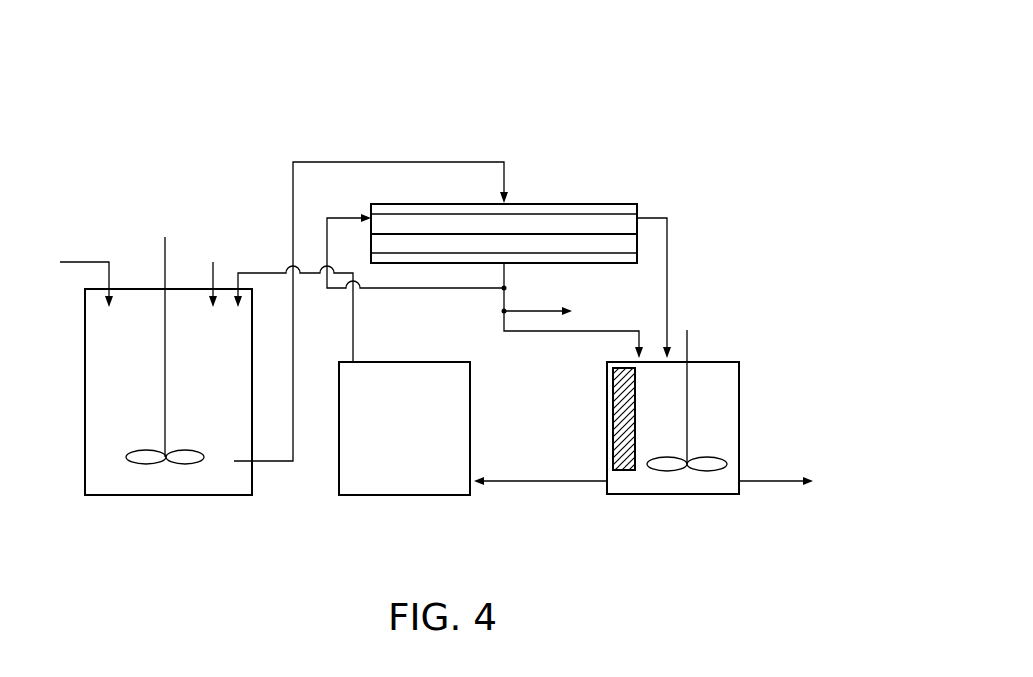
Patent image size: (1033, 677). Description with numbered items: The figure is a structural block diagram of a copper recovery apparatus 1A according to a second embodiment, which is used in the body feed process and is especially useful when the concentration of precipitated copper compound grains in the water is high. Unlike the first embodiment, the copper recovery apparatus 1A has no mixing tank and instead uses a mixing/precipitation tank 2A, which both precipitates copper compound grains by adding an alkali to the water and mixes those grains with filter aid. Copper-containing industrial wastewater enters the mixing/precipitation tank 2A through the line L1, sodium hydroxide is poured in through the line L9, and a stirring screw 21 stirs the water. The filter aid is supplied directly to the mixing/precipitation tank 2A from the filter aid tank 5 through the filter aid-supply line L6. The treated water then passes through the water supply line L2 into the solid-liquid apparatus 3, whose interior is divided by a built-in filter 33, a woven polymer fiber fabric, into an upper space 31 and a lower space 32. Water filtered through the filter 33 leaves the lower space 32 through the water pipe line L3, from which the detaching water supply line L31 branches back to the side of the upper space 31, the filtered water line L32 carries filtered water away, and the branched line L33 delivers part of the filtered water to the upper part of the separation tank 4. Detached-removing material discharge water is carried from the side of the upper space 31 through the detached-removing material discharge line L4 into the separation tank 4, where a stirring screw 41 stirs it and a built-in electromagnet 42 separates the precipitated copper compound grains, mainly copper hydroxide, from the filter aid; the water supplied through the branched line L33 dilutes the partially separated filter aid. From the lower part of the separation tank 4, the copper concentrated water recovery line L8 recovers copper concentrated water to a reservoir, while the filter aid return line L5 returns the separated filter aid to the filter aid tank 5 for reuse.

The copper recovery apparatus 1A is at (423, 76).
The mixing/precipitation tank 2A is at (166, 496).
The stirring screw 21 is at (140, 464).
The line L1 is at (109, 273).
The line L9 is at (213, 272).
The water supply line L2 is at (400, 162).
The solid-liquid apparatus 3 is at (542, 204).
The upper space 31 is at (583, 212).
The filter 33 is at (620, 232).
The lower space 32 is at (632, 250).
The water pipe line L3 is at (504, 278).
The detaching water supply line L31 is at (407, 290).
The filtered water line L32 is at (543, 320).
The branched line L33 is at (639, 341).
The detached-removing material discharge line L4 is at (667, 272).
The separation tank 4 is at (688, 494).
The stirring screw 41 is at (670, 470).
The electromagnet 42 is at (620, 472).
The filter aid tank 5 is at (404, 496).
The filter aid return line L5 is at (540, 483).
The filter aid-supply line L6 is at (353, 330).
The copper concentrated water recovery line L8 is at (775, 481).